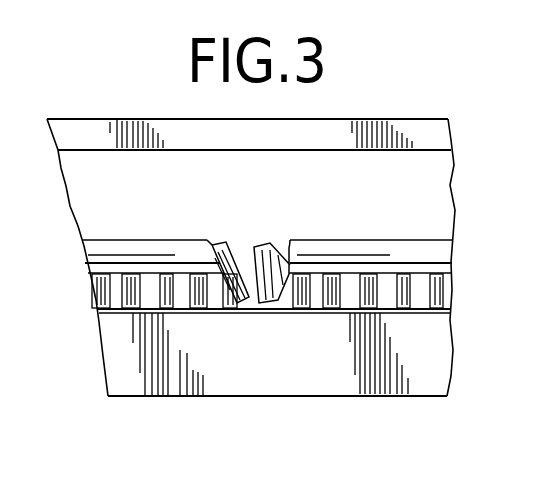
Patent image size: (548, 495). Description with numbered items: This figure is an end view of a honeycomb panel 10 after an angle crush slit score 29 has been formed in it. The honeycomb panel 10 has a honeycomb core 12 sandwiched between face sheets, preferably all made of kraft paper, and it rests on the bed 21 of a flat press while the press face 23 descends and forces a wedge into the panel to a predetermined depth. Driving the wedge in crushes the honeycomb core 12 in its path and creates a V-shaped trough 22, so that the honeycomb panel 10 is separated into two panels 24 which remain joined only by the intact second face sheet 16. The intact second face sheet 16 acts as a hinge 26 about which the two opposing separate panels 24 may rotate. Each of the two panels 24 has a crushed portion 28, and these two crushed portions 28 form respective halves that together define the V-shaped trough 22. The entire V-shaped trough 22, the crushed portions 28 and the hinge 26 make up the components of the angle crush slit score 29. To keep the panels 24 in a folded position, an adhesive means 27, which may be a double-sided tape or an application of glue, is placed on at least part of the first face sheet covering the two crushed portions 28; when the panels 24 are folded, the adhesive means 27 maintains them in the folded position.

The honeycomb panel 10 is at (136, 216).
The honeycomb core 12 is at (436, 290).
The second face sheet 16 is at (328, 314).
The bed 21 is at (265, 380).
The V-shaped trough 22 is at (245, 250).
The press face 23 is at (314, 128).
The panels 24 is at (168, 250).
The hinge 26 is at (252, 318).
The adhesive means 27 is at (222, 243).
The crushed portions 28 is at (220, 302).
The angle crush slit score 29 is at (237, 318).